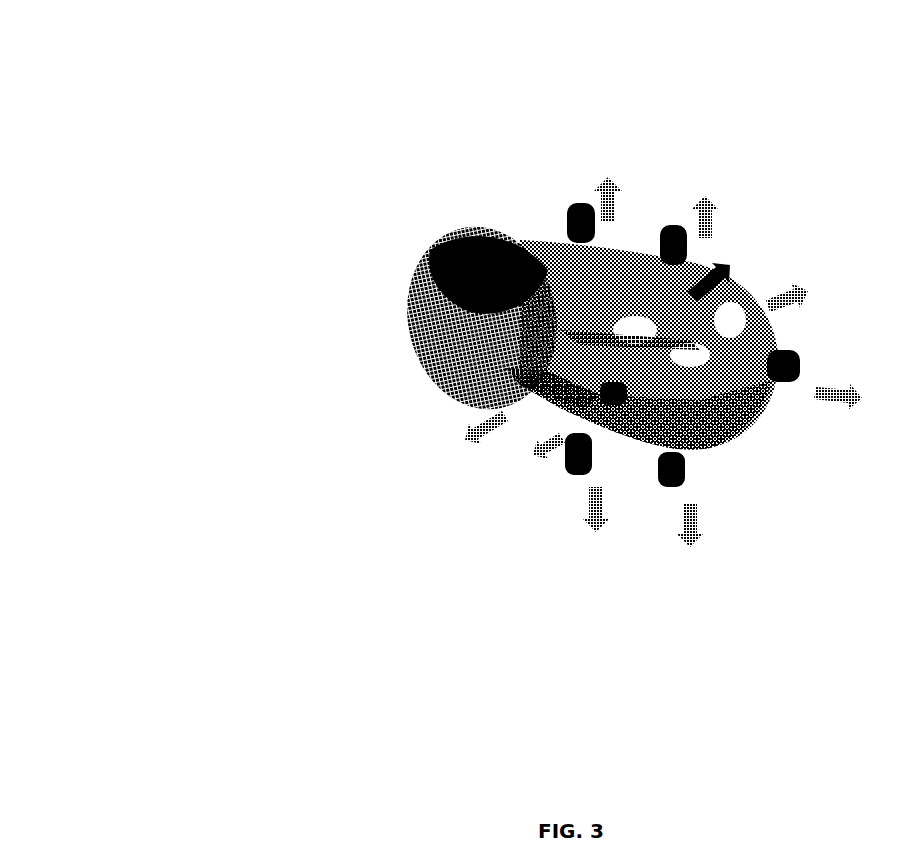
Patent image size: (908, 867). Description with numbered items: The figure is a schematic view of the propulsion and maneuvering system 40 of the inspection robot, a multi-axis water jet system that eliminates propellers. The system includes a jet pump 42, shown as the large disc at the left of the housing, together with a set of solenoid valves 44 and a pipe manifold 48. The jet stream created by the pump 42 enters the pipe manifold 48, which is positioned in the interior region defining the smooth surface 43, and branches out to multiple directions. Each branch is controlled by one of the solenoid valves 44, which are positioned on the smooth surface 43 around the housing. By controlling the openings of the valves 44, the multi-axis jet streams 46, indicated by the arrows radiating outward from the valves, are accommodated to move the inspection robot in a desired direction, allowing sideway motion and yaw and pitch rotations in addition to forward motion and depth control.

The propulsion and maneuvering system 40 is at (99, 67).
The jet pump 42 is at (449, 318).
The smooth surface 43 is at (746, 298).
The solenoid valves 44 is at (786, 400).
The multi-axis jet streams 46 is at (663, 329).
The pipe manifold 48 is at (596, 348).